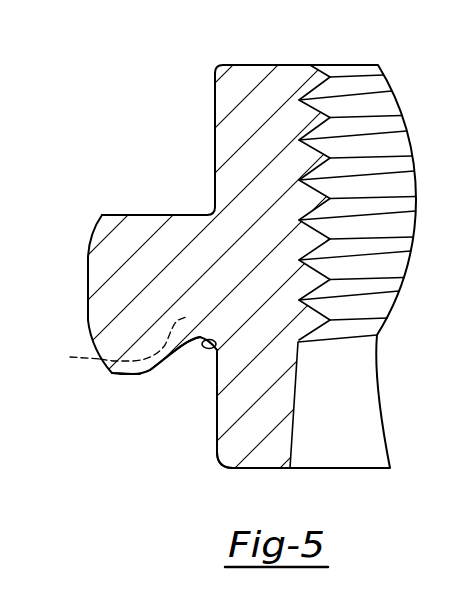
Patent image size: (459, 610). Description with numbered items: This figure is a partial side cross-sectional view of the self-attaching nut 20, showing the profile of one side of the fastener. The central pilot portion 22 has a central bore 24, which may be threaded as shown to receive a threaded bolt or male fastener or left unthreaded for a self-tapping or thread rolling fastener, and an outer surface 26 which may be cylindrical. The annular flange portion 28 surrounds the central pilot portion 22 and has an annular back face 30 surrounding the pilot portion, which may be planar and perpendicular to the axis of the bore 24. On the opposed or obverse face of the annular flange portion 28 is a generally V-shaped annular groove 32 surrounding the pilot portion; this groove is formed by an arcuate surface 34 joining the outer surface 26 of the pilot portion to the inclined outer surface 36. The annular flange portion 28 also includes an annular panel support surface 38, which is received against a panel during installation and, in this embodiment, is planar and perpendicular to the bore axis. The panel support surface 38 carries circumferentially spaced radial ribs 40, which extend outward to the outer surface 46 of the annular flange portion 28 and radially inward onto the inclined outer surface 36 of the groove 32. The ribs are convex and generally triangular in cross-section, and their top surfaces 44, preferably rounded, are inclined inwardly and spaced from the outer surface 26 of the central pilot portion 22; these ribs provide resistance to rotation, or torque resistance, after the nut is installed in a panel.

The self-attaching nut 20 is at (196, 46).
The central pilot portion 22 is at (219, 423).
The central bore 24 is at (375, 433).
The outer surface of the central pilot portion 26 is at (217, 390).
The annular flange portion 28 is at (141, 252).
The annular back face 30 is at (140, 215).
The generally V-shaped annular groove 32 is at (172, 390).
The arcuate surface 34 is at (217, 347).
The inclined outer surface 36 is at (153, 333).
The annular panel support surface 38 is at (76, 356).
The radial ribs 40 is at (117, 388).
The top surface of the radial ribs 44 is at (130, 376).
The outer surface of the annular flange portion 46 is at (90, 292).